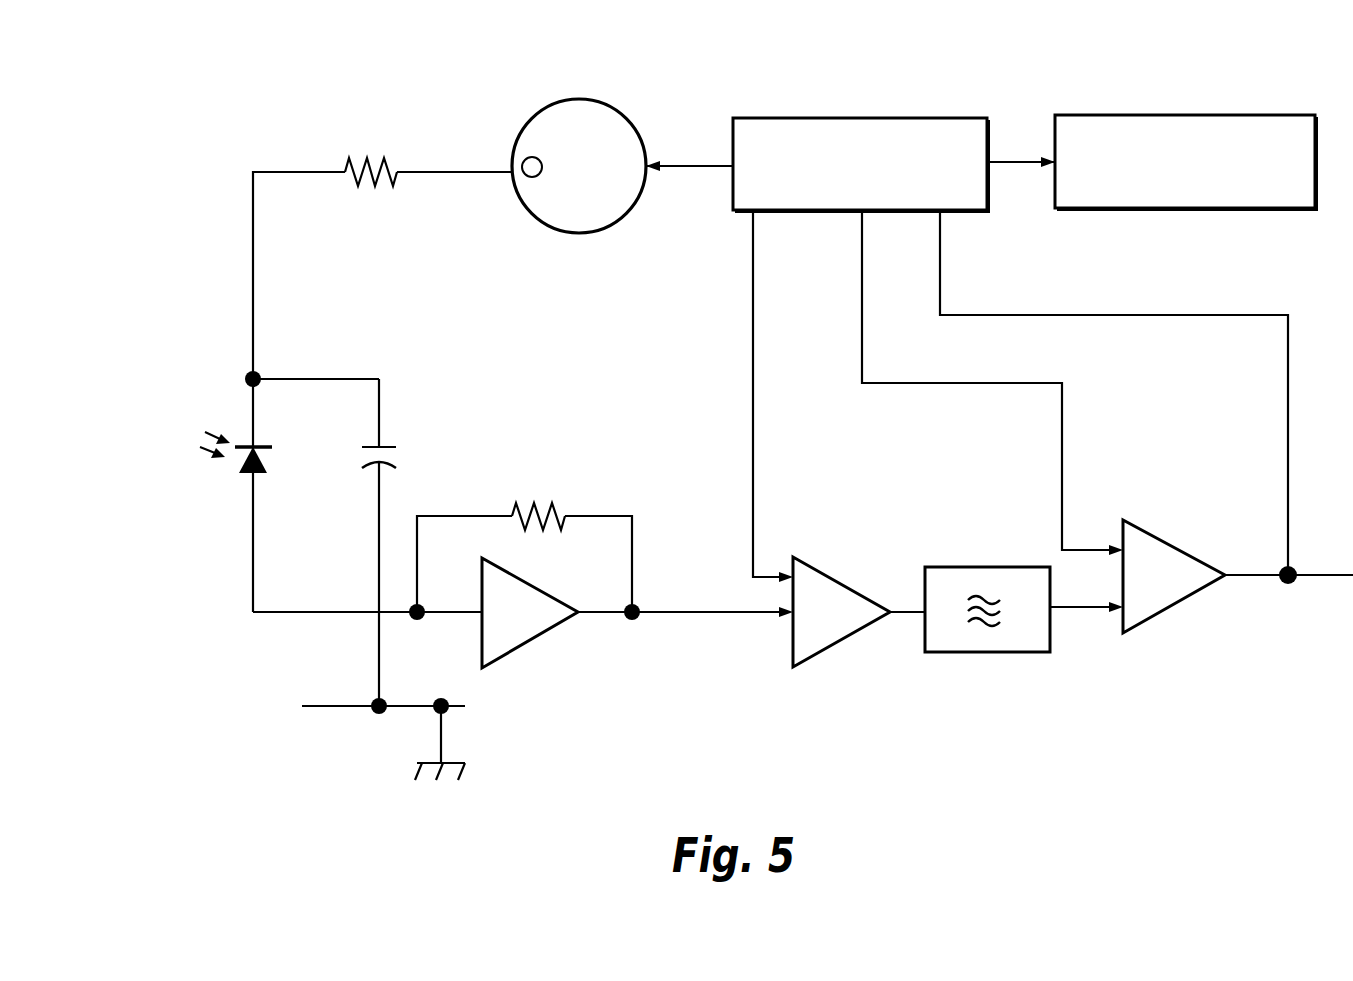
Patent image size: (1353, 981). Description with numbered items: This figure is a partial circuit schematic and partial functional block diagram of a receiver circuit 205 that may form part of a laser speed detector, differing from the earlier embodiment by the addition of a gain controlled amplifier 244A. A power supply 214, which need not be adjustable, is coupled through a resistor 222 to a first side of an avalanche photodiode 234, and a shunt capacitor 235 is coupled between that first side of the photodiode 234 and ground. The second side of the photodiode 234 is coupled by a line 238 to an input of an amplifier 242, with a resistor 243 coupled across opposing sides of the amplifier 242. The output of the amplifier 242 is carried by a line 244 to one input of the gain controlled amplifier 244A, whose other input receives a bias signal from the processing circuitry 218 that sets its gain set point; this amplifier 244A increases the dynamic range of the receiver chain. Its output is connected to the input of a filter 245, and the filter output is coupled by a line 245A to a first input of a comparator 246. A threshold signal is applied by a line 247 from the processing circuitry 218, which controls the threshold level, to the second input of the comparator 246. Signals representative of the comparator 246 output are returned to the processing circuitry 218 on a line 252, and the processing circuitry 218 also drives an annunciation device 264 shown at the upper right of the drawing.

The circuit 205 is at (176, 208).
The power supply 214 is at (582, 97).
The processing circuitry 218 is at (866, 117).
The resistor 222 is at (367, 160).
The avalanche photodiode 234 is at (253, 472).
The shunt capacitor 235 is at (383, 448).
The line 238 is at (343, 616).
The amplifier 242 is at (549, 630).
The resistor 243 is at (553, 514).
The line 244 is at (708, 614).
The gain controlled amplifier 244A is at (848, 618).
The filter 245 is at (1002, 567).
The line 245A is at (1087, 609).
The comparator 246 is at (1175, 546).
The line 247 is at (1062, 407).
The line 252 is at (1128, 315).
The annunciation device 264 is at (1135, 115).